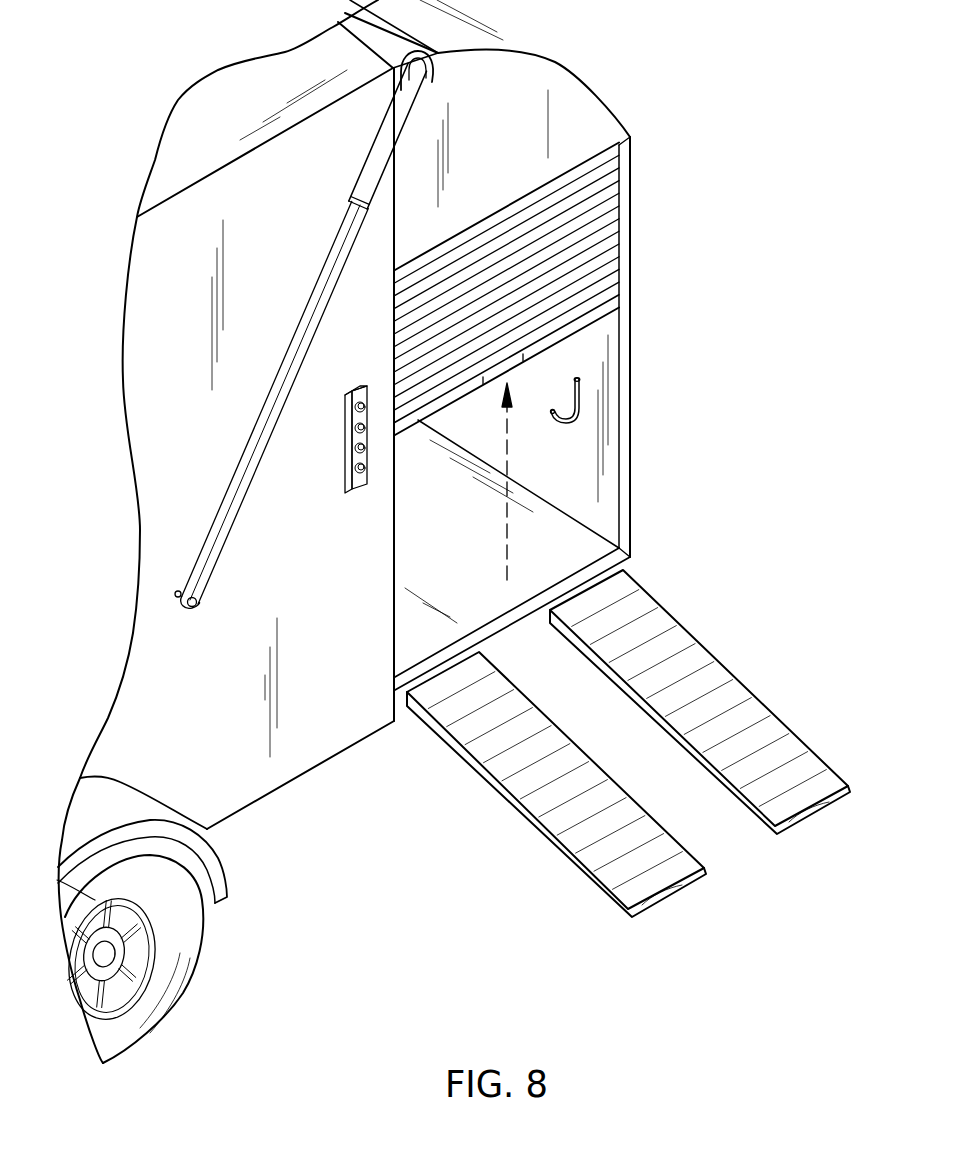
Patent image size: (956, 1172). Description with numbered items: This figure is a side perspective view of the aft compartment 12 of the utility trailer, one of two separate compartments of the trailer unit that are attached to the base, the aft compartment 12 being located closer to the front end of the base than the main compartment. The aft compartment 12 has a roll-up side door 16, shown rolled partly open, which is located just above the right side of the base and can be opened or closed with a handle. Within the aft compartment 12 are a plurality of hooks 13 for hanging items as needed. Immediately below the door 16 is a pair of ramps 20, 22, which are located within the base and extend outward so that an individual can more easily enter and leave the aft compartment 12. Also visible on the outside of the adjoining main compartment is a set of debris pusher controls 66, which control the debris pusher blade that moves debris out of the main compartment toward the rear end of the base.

The aft compartment 12 is at (572, 540).
The hooks 13 is at (582, 402).
The roll-up side door 16 is at (595, 195).
The ramp 20 is at (517, 801).
The ramp 22 is at (740, 687).
The debris pusher controls 66 is at (358, 489).